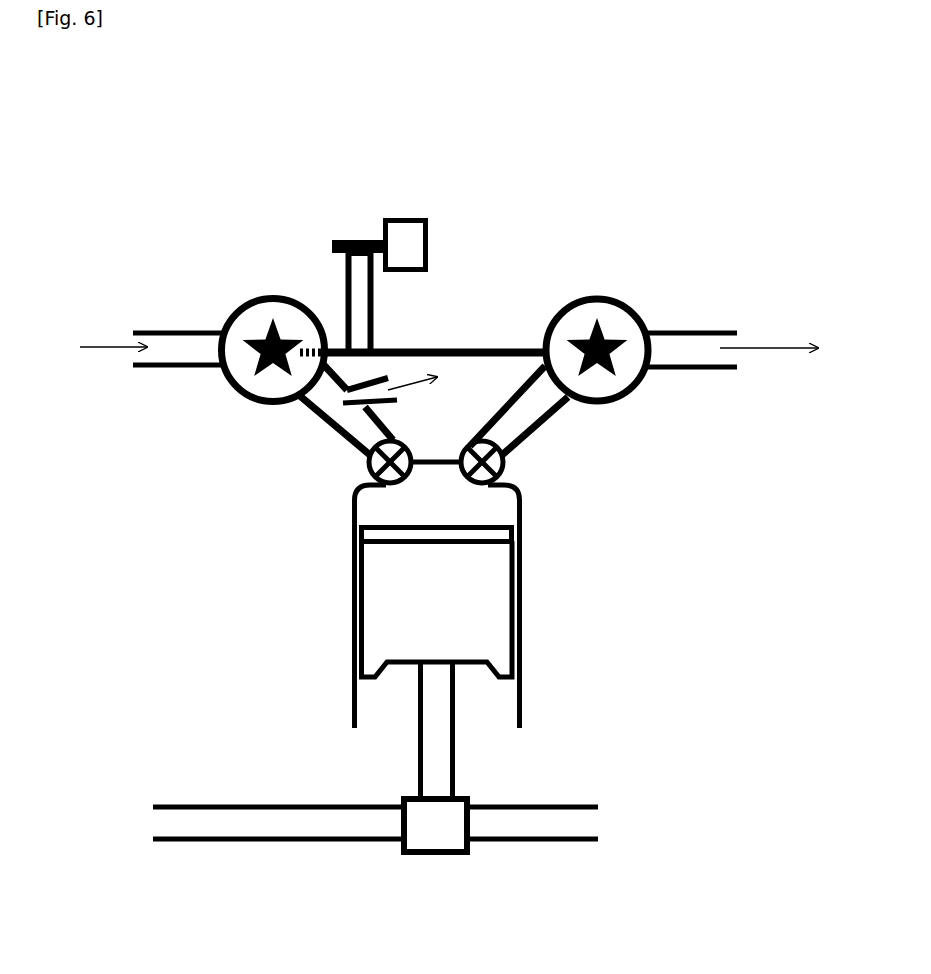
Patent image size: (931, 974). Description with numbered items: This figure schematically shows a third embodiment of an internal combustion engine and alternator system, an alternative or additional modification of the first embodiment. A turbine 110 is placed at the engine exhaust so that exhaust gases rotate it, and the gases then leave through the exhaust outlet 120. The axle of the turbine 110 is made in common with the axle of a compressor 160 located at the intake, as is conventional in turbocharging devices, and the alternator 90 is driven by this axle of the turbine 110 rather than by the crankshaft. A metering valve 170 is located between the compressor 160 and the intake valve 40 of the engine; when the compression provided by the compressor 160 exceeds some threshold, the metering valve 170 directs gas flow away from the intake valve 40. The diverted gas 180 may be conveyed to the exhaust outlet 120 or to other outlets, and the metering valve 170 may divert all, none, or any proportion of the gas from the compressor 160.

The intake valve 40 is at (372, 472).
The alternator 90 is at (402, 238).
The turbine 110 is at (625, 328).
The exhaust outlet 120 is at (693, 370).
The compressor 160 is at (253, 313).
The metering valve 170 is at (397, 400).
The diverted gas 180 is at (392, 366).